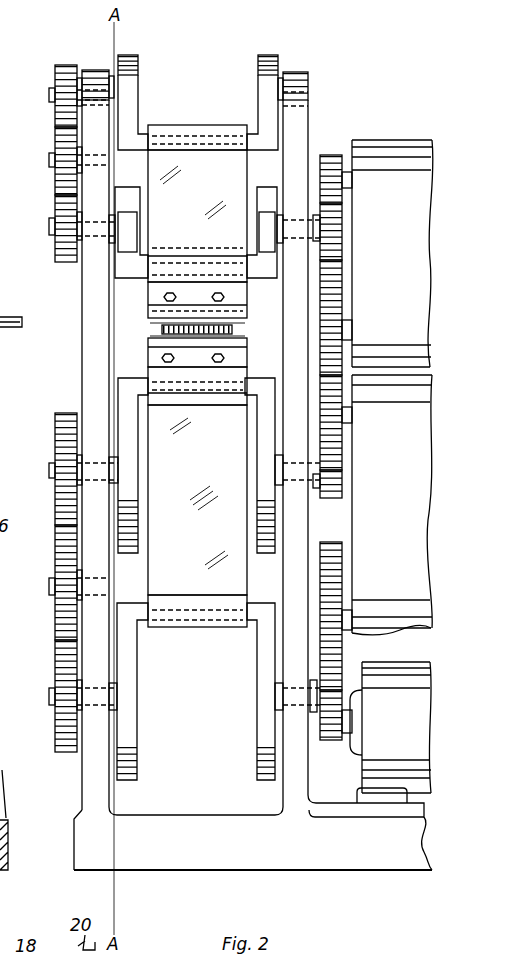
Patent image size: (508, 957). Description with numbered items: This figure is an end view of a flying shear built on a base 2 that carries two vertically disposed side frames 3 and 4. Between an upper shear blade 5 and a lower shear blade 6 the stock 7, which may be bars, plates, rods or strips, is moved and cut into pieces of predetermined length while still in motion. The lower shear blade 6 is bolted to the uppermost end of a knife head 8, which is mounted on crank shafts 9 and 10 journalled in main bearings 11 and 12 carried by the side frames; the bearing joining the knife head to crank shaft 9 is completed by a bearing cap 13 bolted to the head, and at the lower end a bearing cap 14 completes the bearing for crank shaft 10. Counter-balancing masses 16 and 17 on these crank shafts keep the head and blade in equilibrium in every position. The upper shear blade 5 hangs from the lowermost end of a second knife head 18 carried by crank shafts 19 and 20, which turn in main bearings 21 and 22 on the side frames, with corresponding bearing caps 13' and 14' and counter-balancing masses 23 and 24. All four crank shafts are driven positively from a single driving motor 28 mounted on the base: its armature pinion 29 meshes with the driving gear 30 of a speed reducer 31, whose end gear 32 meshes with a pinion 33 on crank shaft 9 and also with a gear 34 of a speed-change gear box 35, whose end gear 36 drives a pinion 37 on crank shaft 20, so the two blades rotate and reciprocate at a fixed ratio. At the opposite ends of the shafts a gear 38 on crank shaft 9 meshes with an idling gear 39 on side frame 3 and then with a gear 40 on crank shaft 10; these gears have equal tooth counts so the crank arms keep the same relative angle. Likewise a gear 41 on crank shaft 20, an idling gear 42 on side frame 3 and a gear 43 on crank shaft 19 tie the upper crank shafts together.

The base 2 is at (246, 858).
The side frame 3 is at (82, 352).
The side frame 4 is at (310, 152).
The upper shear blade 5 is at (168, 312).
The lower shear blade 6 is at (148, 355).
The stock 7 is at (160, 330).
The knife head 8 is at (197, 489).
The crank shaft 9 is at (132, 452).
The crank shaft 10 is at (257, 677).
The main bearing 11 is at (96, 460).
The main bearing 12 is at (95, 712).
The bearing cap 13 is at (211, 381).
The bearing cap 13' is at (217, 276).
The bearing cap 14 is at (197, 625).
The bearing cap 14' is at (197, 126).
The counter-balancing mass 16 is at (200, 544).
The counter-balancing mass 17 is at (257, 775).
The knife head 18 is at (204, 210).
The crank shaft 19 is at (258, 92).
The crank shaft 20 is at (200, 232).
The main bearing 21 is at (97, 70).
The main bearing 22 is at (95, 232).
The counter-balancing mass 23 is at (260, 57).
The counter-balancing mass 24 is at (130, 188).
The driving motor 28 is at (390, 732).
The pinion 29 is at (328, 745).
The driving gear 30 is at (335, 657).
The speed reducer 31 is at (405, 540).
The end gear 32 is at (335, 432).
The pinion 33 is at (326, 498).
The gear 34 is at (335, 295).
The speed-change gear box 35 is at (410, 270).
The end gear 36 is at (333, 152).
The pinion 37 is at (335, 233).
The gear 38 is at (56, 428).
The idling gear 39 is at (60, 560).
The gear 40 is at (57, 680).
The gear 41 is at (56, 250).
The idling gear 42 is at (56, 150).
The gear 43 is at (57, 80).